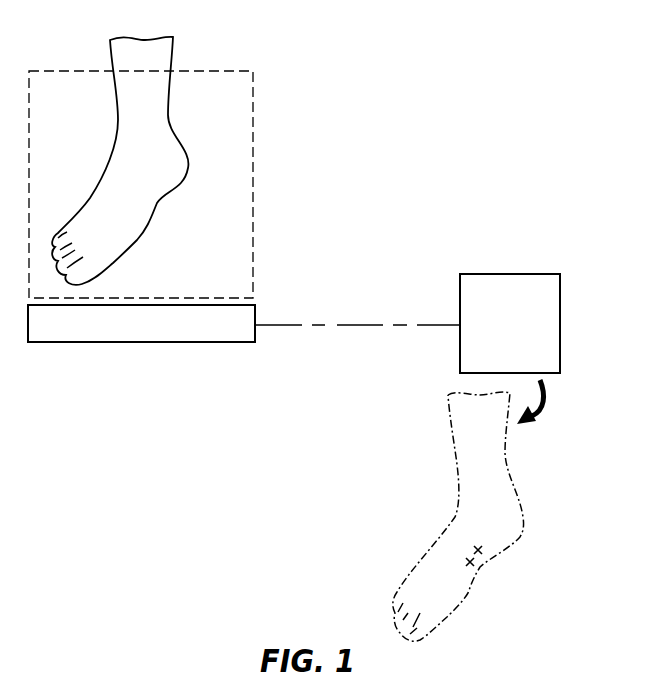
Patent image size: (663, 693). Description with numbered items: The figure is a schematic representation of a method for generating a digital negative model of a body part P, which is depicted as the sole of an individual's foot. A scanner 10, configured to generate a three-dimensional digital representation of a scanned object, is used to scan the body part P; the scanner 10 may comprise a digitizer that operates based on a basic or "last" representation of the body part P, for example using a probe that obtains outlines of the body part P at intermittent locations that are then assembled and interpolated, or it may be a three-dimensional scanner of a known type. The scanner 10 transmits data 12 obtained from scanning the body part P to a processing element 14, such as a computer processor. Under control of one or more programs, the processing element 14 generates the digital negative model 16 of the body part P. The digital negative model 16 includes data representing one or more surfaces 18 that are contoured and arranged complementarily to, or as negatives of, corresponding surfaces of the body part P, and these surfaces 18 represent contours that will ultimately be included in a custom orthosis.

The body part P is at (153, 102).
The scanner 10 is at (160, 300).
The data 12 is at (353, 322).
The processing element 14 is at (524, 339).
The digital negative model 16 is at (532, 466).
The surfaces 18 is at (493, 522).